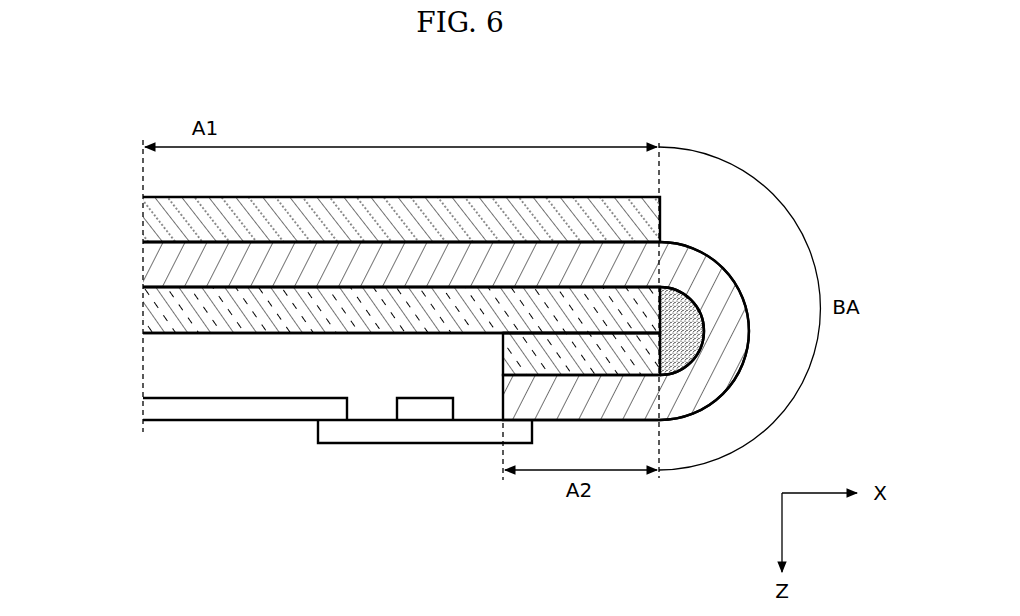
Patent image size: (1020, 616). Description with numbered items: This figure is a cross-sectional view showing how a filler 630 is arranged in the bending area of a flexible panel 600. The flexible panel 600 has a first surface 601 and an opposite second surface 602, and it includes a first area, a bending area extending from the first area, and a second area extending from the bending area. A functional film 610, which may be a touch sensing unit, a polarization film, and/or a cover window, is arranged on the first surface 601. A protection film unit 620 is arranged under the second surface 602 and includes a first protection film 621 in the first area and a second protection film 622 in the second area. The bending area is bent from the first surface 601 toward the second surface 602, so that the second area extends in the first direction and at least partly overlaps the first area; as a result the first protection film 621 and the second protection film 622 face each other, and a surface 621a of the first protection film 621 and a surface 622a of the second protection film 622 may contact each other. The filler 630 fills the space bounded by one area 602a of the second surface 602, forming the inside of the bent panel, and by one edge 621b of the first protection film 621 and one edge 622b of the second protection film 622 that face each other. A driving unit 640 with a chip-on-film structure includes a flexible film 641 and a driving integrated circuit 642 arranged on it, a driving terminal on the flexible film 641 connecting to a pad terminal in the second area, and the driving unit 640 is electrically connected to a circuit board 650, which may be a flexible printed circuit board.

The flexible panel 600 is at (156, 262).
The first surface 601 is at (488, 240).
The second surface 602 is at (538, 297).
The one area of the second surface 602a is at (690, 363).
The functional film 610 is at (156, 222).
The protection film unit 620 is at (401, 327).
The first protection film 621 is at (162, 334).
The surface of the first protection film 621a is at (276, 333).
The one edge of the first protection film 621b is at (700, 288).
The second protection film 622 is at (518, 358).
The surface of the second protection film 622a is at (490, 331).
The one edge of the second protection film 622b is at (683, 366).
The filler 630 is at (733, 282).
The driving unit 640 is at (425, 479).
The flexible film 641 is at (442, 520).
The driving integrated circuit 642 is at (421, 413).
The circuit board 650 is at (180, 410).